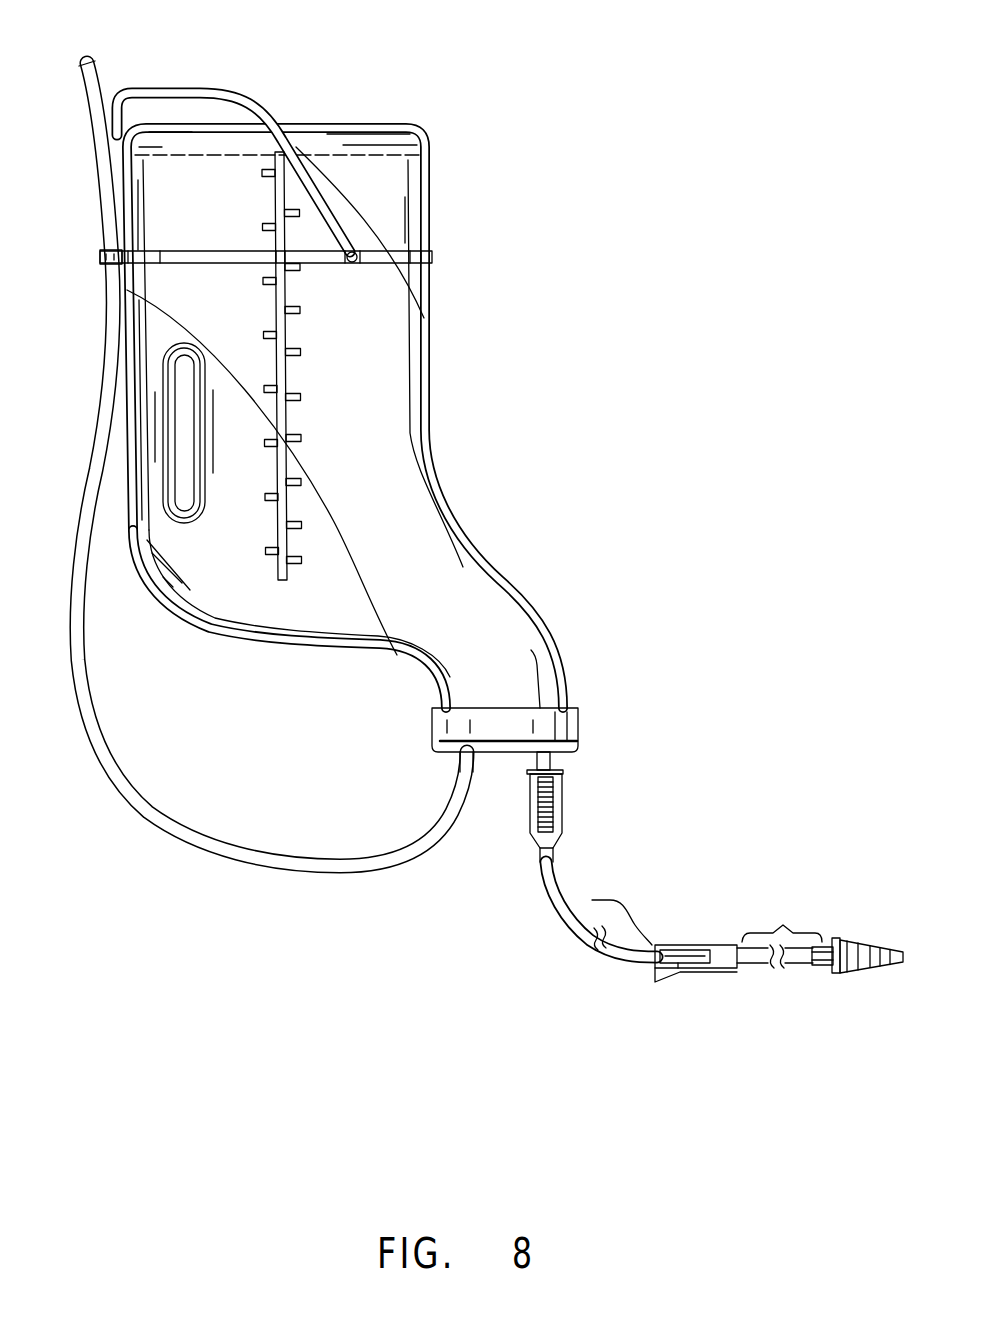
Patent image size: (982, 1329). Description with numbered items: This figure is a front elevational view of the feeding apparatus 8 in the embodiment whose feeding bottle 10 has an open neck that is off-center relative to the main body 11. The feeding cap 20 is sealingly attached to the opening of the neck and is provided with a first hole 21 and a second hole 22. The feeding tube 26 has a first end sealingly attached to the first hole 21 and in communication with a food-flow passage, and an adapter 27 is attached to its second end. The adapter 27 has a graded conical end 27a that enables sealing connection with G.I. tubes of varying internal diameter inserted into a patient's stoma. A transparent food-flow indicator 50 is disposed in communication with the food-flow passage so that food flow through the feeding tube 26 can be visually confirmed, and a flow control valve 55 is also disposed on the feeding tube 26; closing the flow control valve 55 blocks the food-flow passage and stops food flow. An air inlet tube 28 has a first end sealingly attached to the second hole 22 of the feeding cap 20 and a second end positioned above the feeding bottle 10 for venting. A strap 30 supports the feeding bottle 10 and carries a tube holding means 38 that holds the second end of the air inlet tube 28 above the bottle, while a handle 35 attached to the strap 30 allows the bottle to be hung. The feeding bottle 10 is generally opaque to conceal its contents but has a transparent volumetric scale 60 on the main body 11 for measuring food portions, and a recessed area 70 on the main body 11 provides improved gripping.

The feeding apparatus 8 is at (454, 530).
The feeding bottle 10 is at (460, 178).
The main body 11 is at (537, 650).
The feeding cap 20 is at (580, 714).
The first hole 21 is at (531, 758).
The second hole 22 is at (453, 757).
The feeding tube 26 is at (554, 907).
The adapter 27 is at (864, 958).
The graded conical end 27a is at (866, 973).
The air inlet tube 28 is at (198, 832).
The strap 30 is at (432, 258).
The handle 35 is at (203, 90).
The tube holding means 38 is at (100, 257).
The transparent food-flow indicator 50 is at (566, 802).
The flow control valve 55 is at (705, 945).
The transparent volumetric scale 60 is at (297, 382).
The recessed area 70 is at (176, 430).